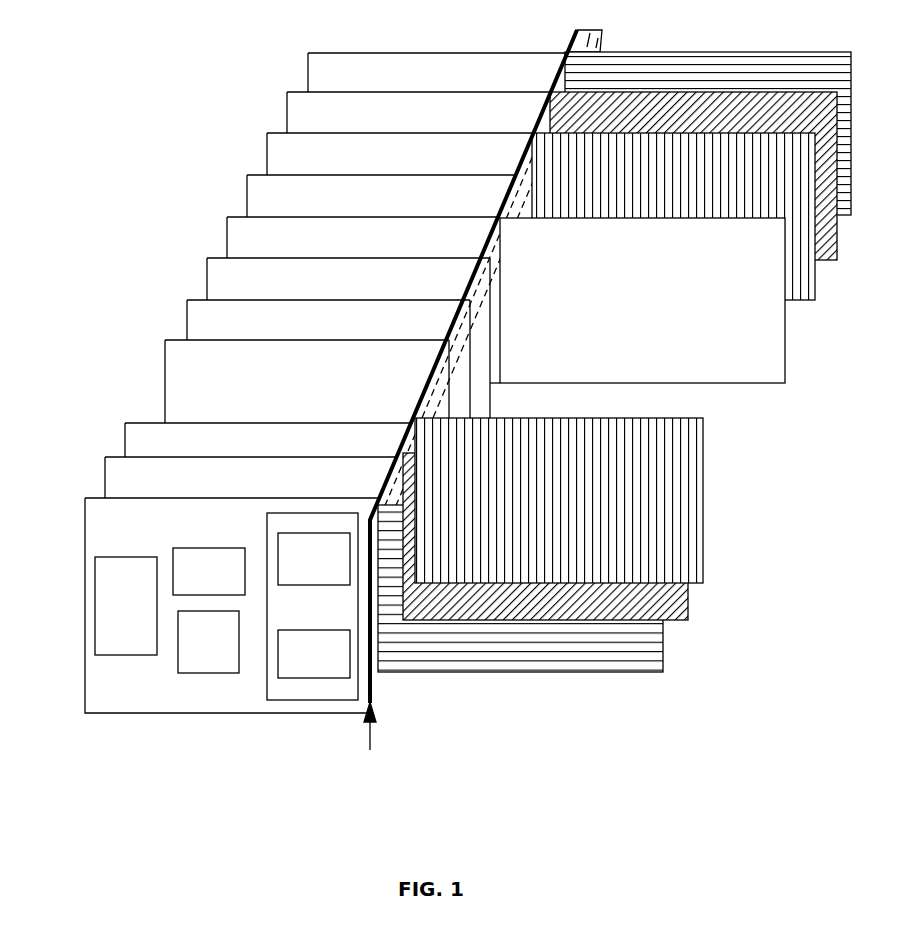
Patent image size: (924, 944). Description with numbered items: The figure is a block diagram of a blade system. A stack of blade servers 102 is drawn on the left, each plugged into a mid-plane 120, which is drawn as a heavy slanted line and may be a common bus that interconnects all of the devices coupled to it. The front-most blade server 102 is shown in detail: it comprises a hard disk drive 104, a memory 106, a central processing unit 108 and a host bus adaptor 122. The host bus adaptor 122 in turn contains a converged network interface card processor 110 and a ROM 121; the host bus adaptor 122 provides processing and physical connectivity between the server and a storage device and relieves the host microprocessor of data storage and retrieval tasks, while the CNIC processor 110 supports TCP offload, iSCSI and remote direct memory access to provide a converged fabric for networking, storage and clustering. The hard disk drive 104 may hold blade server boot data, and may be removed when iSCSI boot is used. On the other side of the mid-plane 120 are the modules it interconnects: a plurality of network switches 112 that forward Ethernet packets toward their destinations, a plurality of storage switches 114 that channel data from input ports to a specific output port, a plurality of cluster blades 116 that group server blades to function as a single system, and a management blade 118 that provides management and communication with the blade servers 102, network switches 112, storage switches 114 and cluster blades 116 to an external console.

The blade servers 102 is at (85, 508).
The hard disk drive 104 is at (95, 568).
The memory 106 is at (212, 669).
The central processing unit 108 is at (214, 594).
The converged network interface card (CNIC) processor 110 is at (318, 675).
The network switches 112 is at (663, 655).
The storage switches 114 is at (837, 233).
The cluster blades 116 is at (815, 287).
The management blade 118 is at (785, 352).
The mid-plane 120 is at (372, 699).
The ROM 121 is at (318, 580).
The host bus adaptor (HBA) 122 is at (267, 700).